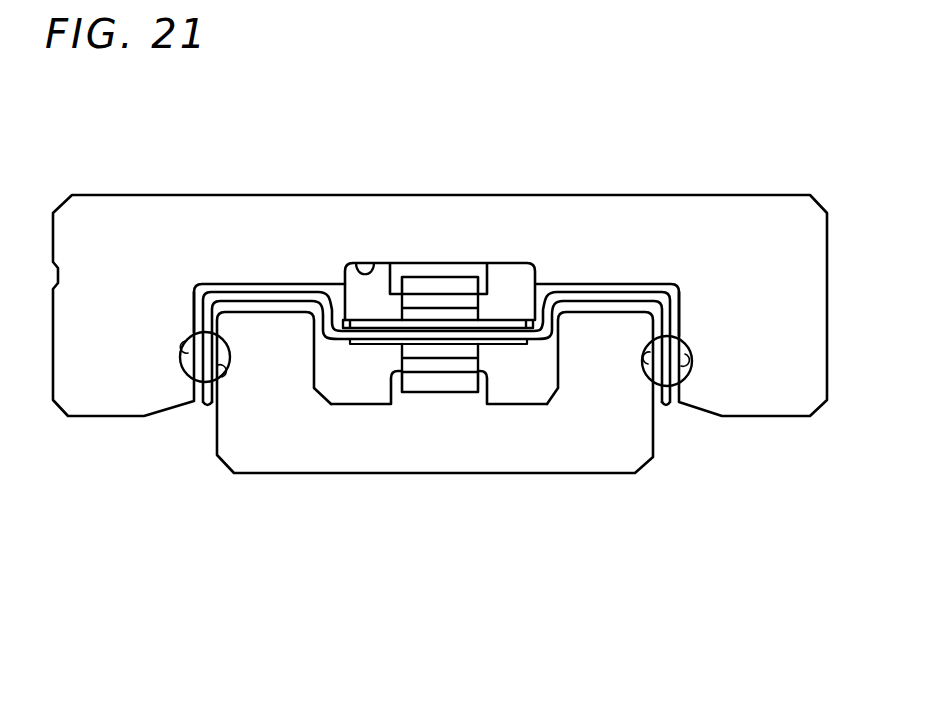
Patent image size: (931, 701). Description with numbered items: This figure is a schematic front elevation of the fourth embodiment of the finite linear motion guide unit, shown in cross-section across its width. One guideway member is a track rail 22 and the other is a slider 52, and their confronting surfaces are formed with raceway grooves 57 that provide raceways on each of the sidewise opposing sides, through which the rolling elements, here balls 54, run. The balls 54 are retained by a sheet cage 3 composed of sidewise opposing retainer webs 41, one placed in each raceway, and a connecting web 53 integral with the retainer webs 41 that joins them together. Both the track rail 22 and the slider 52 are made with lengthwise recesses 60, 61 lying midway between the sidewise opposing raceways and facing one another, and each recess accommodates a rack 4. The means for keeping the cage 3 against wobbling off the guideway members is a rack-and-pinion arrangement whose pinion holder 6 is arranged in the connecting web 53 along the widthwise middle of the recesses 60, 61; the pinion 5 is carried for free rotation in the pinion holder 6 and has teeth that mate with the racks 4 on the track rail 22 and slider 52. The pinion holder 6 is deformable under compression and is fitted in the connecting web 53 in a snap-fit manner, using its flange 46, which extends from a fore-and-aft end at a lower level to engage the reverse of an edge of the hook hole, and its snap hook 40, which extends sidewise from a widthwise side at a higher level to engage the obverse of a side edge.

The cage 3 is at (213, 297).
The rack 4 is at (428, 270).
The pinion 5 is at (445, 317).
The pinion holder 6 is at (502, 323).
The track rail 22 is at (533, 453).
The snap hook 40 is at (337, 280).
The retainer web 41 is at (207, 317).
The flange 46 is at (438, 344).
The slider 52 is at (617, 222).
The connecting web 53 is at (272, 302).
The ball 54 is at (190, 376).
The raceway groove 57 is at (190, 338).
The lengthwise recess 60 is at (357, 402).
The lengthwise recess 61 is at (364, 272).